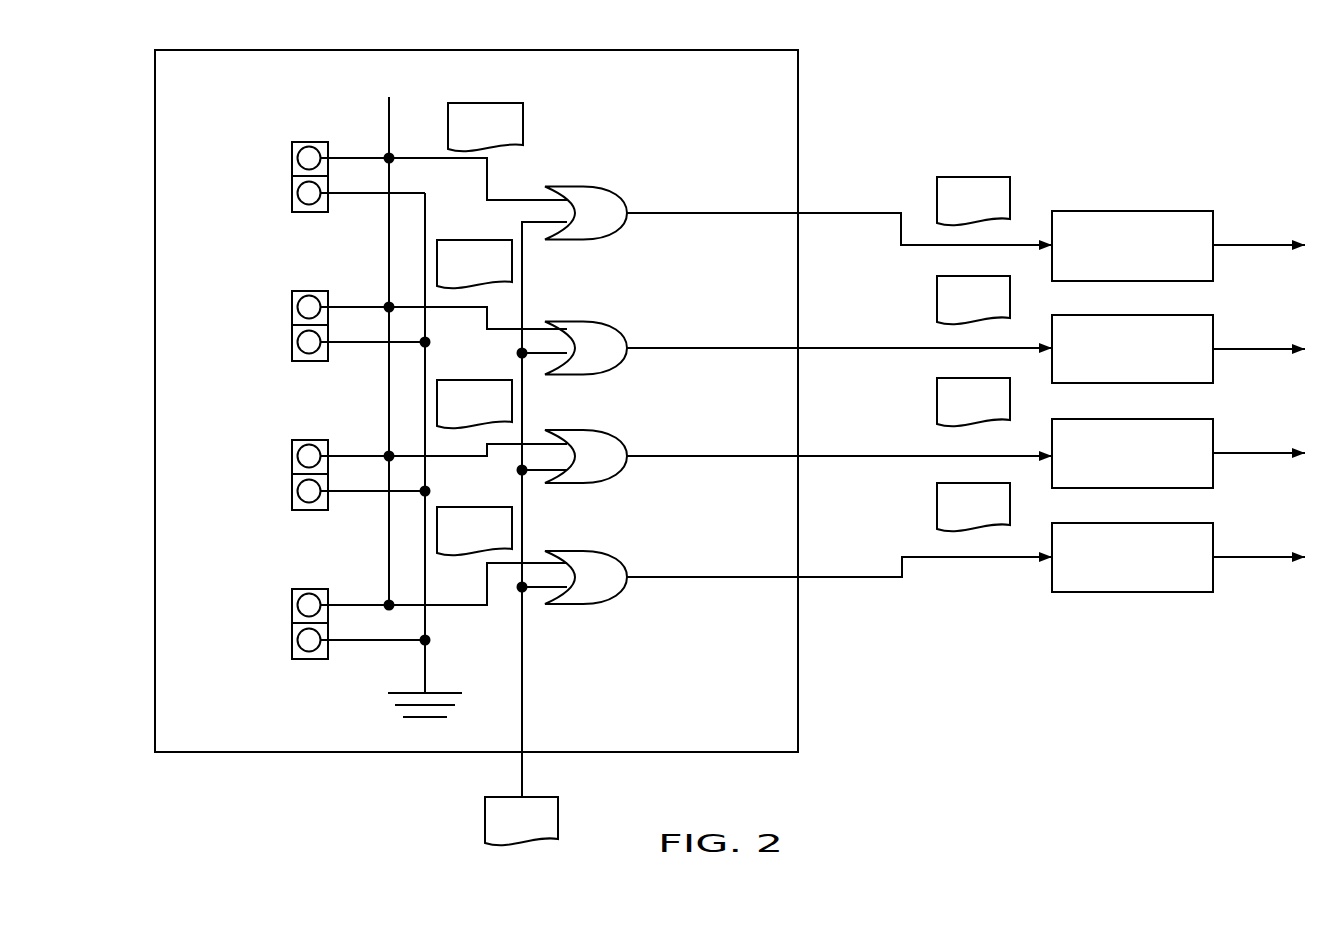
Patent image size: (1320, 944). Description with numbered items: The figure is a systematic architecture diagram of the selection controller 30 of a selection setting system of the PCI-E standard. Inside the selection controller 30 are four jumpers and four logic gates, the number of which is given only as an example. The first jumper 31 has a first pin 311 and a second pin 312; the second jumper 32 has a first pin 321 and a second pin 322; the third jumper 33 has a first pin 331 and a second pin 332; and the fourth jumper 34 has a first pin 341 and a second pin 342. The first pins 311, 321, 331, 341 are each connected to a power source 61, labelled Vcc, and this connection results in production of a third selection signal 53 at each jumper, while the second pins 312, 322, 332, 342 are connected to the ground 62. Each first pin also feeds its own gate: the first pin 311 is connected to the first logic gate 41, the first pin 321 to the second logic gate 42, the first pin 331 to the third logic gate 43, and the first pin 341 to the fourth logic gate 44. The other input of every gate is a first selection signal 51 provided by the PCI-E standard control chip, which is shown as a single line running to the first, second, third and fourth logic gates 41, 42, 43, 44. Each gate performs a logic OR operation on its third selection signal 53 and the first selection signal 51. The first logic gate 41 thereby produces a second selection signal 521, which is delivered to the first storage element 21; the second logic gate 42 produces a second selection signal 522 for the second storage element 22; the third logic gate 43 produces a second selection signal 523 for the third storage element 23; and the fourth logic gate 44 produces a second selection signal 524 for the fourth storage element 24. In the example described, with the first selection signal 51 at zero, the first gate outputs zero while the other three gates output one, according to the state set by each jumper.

The first storage element 21 is at (1184, 260).
The second storage element 22 is at (1184, 363).
The third storage element 23 is at (1184, 468).
The fourth storage element 24 is at (1184, 572).
The selection controller 30 is at (773, 101).
The first jumper 31 is at (172, 121).
The first pin of the first jumper 311 is at (300, 153).
The second pin of the first jumper 312 is at (300, 188).
The second jumper 32 is at (172, 270).
The first pin of the second jumper 321 is at (300, 302).
The second pin of the second jumper 322 is at (300, 337).
The third jumper 33 is at (172, 419).
The first pin of the third jumper 331 is at (300, 451).
The second pin of the third jumper 332 is at (300, 486).
The fourth jumper 34 is at (172, 568).
The first pin of the fourth jumper 341 is at (300, 600).
The second pin of the fourth jumper 342 is at (300, 635).
The first logic gate 41 is at (610, 226).
The second logic gate 42 is at (610, 361).
The third logic gate 43 is at (610, 469).
The fourth logic gate 44 is at (610, 590).
The first selection signal 51 is at (522, 829).
The third selection signal 53 is at (486, 140).
The second selection signal 521 is at (987, 210).
The second selection signal 522 is at (987, 310).
The second selection signal 523 is at (987, 412).
The second selection signal 524 is at (987, 517).
The power source 61 is at (420, 334).
The ground 62 is at (402, 463).